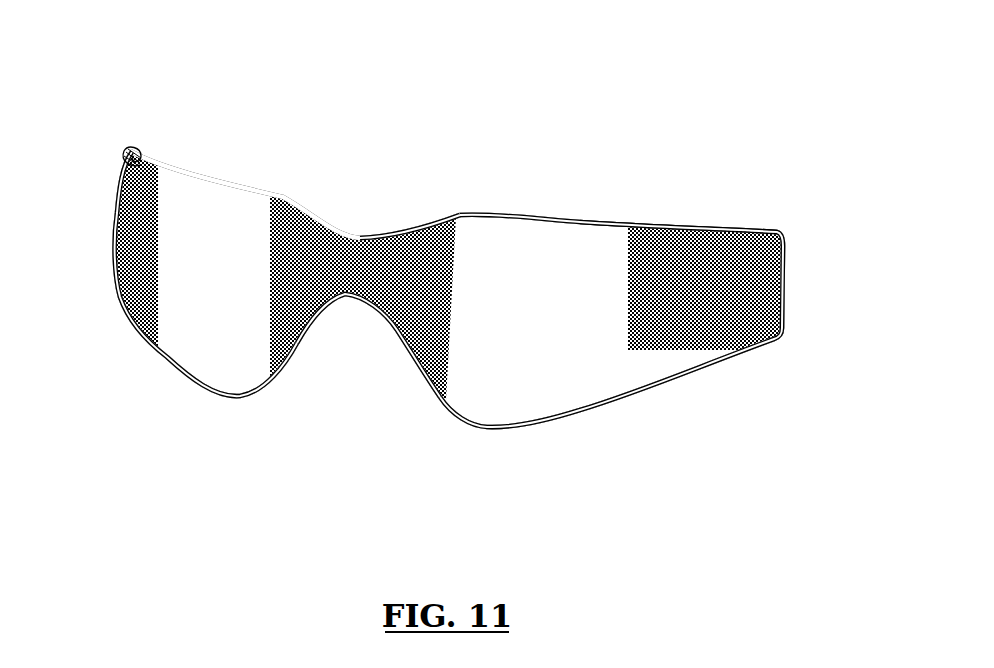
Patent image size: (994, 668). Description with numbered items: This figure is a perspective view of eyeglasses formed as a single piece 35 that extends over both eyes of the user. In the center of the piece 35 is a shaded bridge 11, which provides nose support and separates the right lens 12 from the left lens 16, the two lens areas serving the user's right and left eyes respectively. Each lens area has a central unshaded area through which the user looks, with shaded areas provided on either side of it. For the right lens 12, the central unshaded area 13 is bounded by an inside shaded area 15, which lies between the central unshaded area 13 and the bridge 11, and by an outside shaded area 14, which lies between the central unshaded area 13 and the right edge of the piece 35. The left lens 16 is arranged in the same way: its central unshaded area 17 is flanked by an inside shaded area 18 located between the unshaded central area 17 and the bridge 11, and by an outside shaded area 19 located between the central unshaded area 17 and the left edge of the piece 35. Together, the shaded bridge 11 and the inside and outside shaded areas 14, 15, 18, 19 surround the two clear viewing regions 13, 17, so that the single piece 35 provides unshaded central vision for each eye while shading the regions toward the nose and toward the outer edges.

The single piece 35 is at (451, 272).
The shaded bridge 11 is at (350, 252).
The right lens 12 is at (203, 283).
The central unshaded area 13 is at (196, 197).
The outside shaded area 14 is at (142, 165).
The inside shaded area 15 is at (284, 232).
The left lens 16 is at (611, 322).
The central unshaded area 17 is at (537, 247).
The inside shaded area 18 is at (437, 250).
The outside shaded area 19 is at (662, 258).